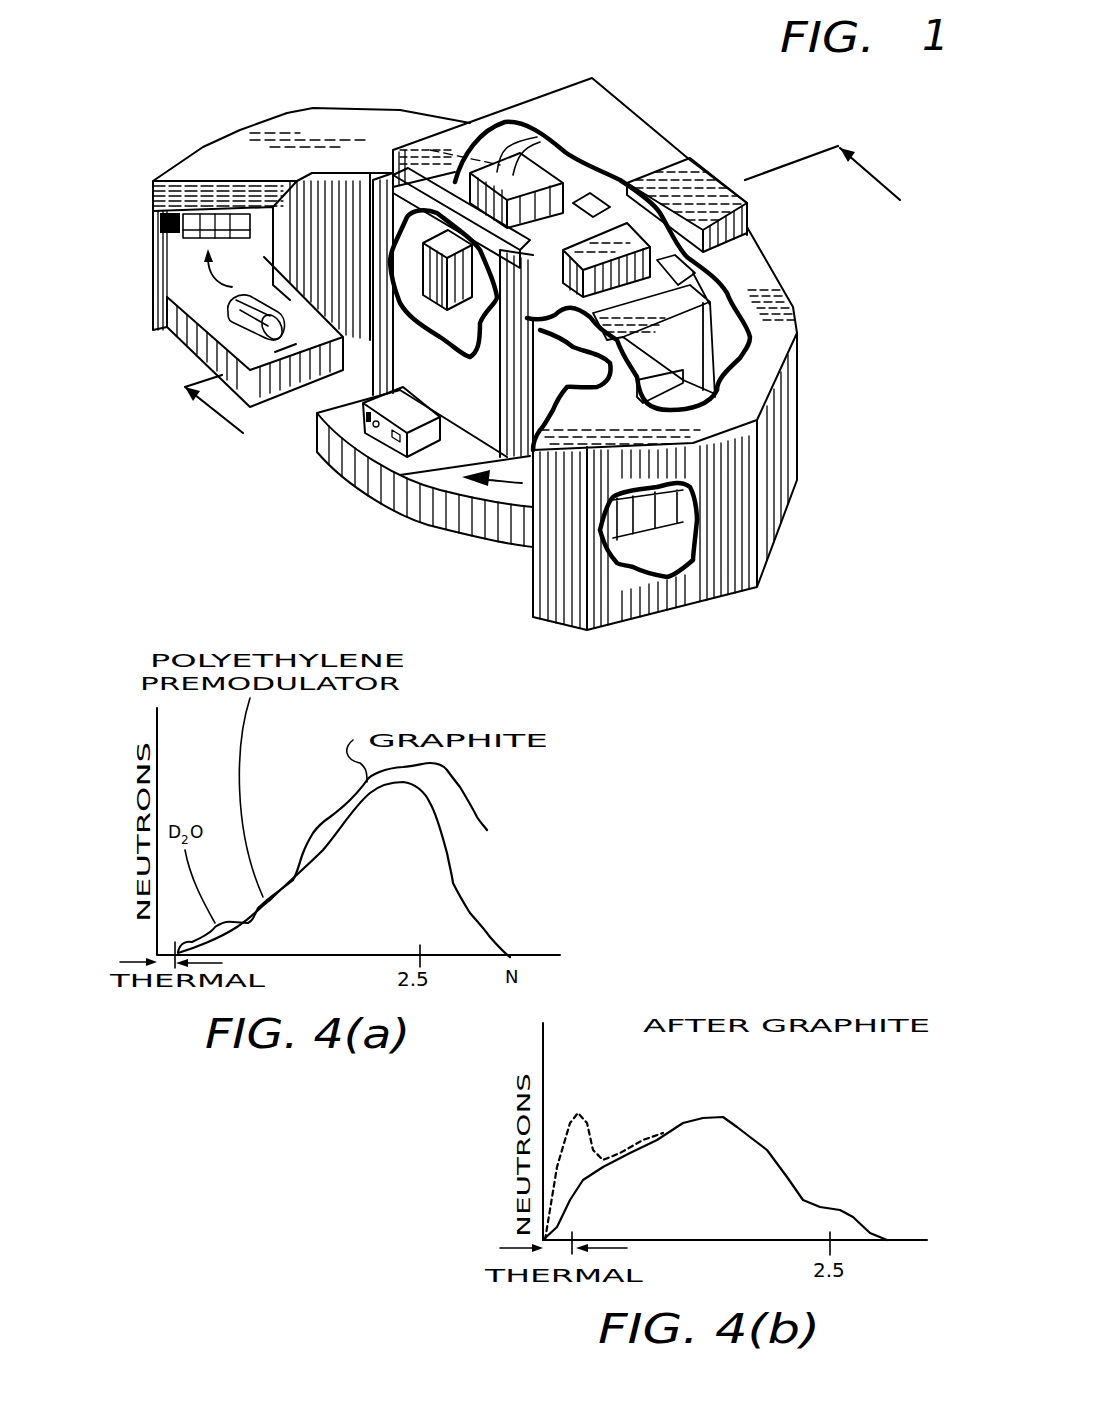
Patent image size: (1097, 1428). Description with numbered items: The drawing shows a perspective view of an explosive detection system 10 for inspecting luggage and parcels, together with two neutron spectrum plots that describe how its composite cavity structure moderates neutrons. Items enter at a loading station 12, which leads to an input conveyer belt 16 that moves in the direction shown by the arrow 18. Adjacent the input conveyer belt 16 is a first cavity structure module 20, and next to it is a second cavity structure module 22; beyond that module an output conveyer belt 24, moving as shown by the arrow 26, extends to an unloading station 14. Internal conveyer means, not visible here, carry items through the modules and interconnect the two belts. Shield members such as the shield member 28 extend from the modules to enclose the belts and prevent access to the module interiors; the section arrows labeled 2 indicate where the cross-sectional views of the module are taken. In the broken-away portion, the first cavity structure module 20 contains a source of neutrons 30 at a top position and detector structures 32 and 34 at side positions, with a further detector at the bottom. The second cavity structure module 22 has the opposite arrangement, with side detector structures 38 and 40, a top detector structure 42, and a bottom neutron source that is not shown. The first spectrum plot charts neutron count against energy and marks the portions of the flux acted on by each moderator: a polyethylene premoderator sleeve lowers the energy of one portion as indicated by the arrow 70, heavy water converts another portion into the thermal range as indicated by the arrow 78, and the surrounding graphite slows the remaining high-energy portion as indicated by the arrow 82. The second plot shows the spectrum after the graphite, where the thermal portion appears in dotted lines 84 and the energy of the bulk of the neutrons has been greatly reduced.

In FIG. 1, the explosive detection system 10 is at (437, 90).
In FIG. 1, the loading station 12 is at (233, 331).
In FIG. 1, the unloading station 14 is at (372, 440).
In FIG. 1, the input conveyer belt 16 is at (191, 271).
In FIG. 1, the arrow 18 is at (224, 263).
In FIG. 1, the first cavity structure module 20 is at (593, 100).
In FIG. 1, the second cavity structure module 22 is at (690, 173).
In FIG. 1, the output conveyer belt 24 is at (450, 487).
In FIG. 1, the arrow 26 is at (323, 120).
In FIG. 1, the shield member 28 is at (790, 333).
In FIG. 1, the source of neutrons 30 is at (498, 167).
In FIG. 1, the detector structure 32 is at (433, 292).
In FIG. 1, the detector structure 34 is at (597, 200).
In FIG. 1, the side detector structure 38 is at (560, 338).
In FIG. 1, the side detector structure 40 is at (698, 283).
In FIG. 1, the top detector structure 42 is at (672, 243).
In FIG. 1, the section view indicator 2 is at (555, 312).
In FIG. 4A, the arrow 70 is at (236, 916).
In FIG. 4A, the arrow 78 is at (190, 910).
In FIG. 4A, the arrow 82 is at (283, 878).
In FIG. 4B, the dotted lines 84 is at (587, 1124).